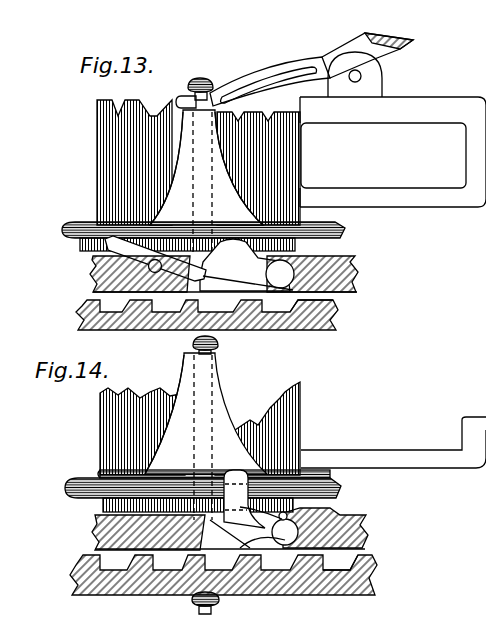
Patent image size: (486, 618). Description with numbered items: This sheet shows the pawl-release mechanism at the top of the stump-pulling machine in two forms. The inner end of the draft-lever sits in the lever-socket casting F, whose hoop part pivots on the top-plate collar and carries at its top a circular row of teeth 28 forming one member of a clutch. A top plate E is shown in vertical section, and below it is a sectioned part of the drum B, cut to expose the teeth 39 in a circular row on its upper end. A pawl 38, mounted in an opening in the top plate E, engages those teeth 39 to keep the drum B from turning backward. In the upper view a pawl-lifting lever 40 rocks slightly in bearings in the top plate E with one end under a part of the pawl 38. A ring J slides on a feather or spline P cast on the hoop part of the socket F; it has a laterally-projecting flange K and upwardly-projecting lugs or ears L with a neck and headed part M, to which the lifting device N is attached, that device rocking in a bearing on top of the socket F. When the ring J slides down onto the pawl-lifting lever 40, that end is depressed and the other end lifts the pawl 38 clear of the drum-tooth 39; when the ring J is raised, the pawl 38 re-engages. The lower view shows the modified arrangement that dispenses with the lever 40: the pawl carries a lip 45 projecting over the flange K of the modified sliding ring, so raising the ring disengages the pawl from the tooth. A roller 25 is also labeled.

In FIG. 13, the circular row of teeth 28 is at (113, 110).
In FIG. 14, the circular row of teeth 28 is at (200, 428).
In FIG. 13, the roller 25 is at (258, 168).
In FIG. 13, the feather or spline P is at (206, 182).
In FIG. 14, the feather or spline P is at (206, 436).
In FIG. 13, the upwardly-projecting lugs or ears L is at (166, 168).
In FIG. 14, the upwardly-projecting lugs or ears L is at (164, 415).
In FIG. 13, the ring J is at (243, 238).
In FIG. 14, the ring J is at (100, 473).
In FIG. 13, the neck and headed part M is at (213, 84).
In FIG. 14, the neck and headed part M is at (215, 476).
In FIG. 13, the lifting device N is at (257, 84).
In FIG. 13, the lever-socket casting F is at (393, 152).
In FIG. 14, the lever-socket casting F is at (393, 442).
In FIG. 13, the laterally-projecting flange K is at (357, 237).
In FIG. 14, the laterally-projecting flange K is at (358, 490).
In FIG. 13, the top plate E is at (360, 274).
In FIG. 14, the top plate E is at (385, 533).
In FIG. 13, the drum B is at (250, 330).
In FIG. 14, the drum B is at (301, 592).
In FIG. 13, the teeth 39 is at (176, 322).
In FIG. 14, the teeth 39 is at (346, 594).
In FIG. 13, the pawl-lifting lever 40 is at (163, 266).
In FIG. 13, the pawl 38 is at (245, 265).
In FIG. 14, the pawl 38 is at (247, 528).
In FIG. 14, the lip 45 is at (239, 493).